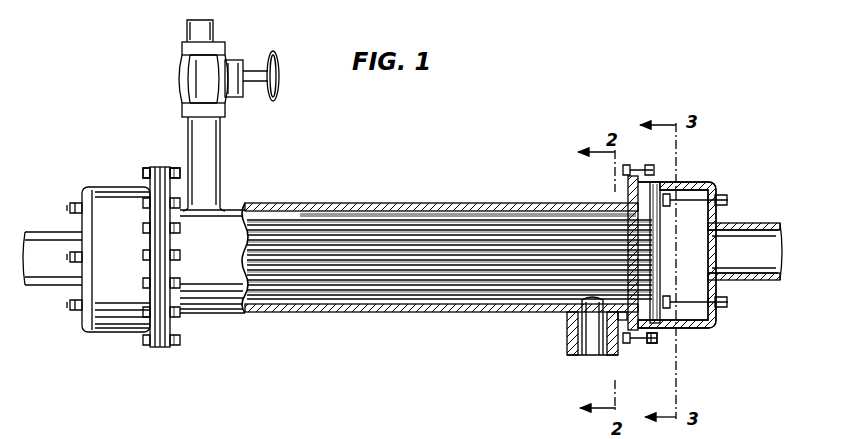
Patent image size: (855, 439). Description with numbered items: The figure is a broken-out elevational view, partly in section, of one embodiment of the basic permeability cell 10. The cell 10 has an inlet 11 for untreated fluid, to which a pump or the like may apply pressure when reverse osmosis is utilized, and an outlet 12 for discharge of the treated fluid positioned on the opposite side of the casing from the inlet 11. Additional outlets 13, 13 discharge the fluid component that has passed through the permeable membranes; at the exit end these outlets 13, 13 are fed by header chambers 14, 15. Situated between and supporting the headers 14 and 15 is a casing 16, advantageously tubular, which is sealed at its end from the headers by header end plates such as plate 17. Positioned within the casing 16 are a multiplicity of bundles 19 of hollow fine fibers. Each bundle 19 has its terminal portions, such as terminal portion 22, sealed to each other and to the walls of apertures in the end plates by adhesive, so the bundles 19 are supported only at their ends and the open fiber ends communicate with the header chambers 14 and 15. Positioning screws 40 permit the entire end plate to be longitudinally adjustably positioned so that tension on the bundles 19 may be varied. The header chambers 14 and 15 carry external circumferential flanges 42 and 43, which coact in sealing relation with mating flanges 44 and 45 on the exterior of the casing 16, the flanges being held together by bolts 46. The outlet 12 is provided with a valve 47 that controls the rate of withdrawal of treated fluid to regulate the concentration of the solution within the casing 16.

The permeability cell 10 is at (292, 203).
The inlet 11 is at (567, 348).
The outlet 12 is at (208, 164).
The outlets 13 is at (57, 242).
The header chamber 14 is at (131, 325).
The header chamber 15 is at (692, 329).
The casing 16 is at (512, 205).
The header end plate 17 is at (660, 182).
The bundles 19 is at (572, 291).
The terminal portion 22 is at (643, 277).
The positioning screws 40 is at (694, 203).
The external circumferential flange 42 is at (644, 350).
The external circumferential flange 43 is at (171, 349).
The mating flange 44 is at (630, 346).
The mating flange 45 is at (158, 349).
The bolts 46 is at (148, 172).
The valve 47 is at (212, 68).